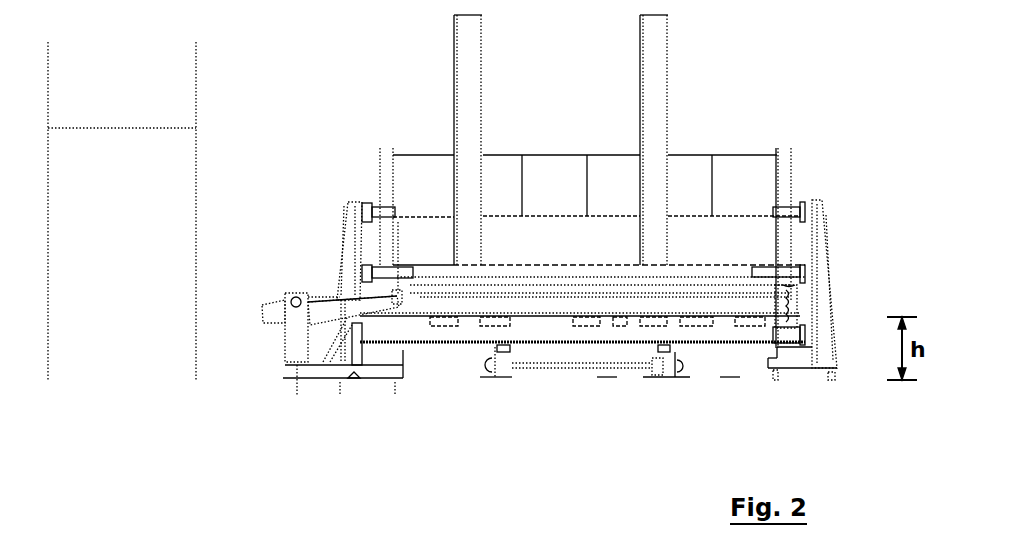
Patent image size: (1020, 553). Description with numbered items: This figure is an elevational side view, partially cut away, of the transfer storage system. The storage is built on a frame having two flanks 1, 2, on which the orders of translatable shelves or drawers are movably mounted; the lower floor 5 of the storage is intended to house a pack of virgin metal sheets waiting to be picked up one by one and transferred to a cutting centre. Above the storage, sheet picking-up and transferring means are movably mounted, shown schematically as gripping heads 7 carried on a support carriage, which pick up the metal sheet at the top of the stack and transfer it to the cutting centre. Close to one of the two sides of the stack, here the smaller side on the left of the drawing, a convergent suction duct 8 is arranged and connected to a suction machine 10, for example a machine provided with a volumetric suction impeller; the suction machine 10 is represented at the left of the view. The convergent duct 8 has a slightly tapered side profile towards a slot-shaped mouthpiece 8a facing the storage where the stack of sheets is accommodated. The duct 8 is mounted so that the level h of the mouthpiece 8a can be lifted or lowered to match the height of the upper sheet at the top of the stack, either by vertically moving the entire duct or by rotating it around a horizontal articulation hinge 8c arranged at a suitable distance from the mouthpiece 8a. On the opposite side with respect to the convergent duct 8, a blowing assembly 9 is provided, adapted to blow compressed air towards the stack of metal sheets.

The suction machine 10 is at (196, 150).
The frame flank 1 is at (357, 233).
The frame flank 2 is at (818, 240).
The gripping heads 7 is at (475, 240).
The lower floor 5 is at (453, 333).
The convergent suction duct 8 is at (318, 314).
The slot-shaped mouthpiece 8a is at (400, 300).
The horizontal articulation hinge 8c is at (302, 302).
The blowing assembly 9 is at (797, 295).